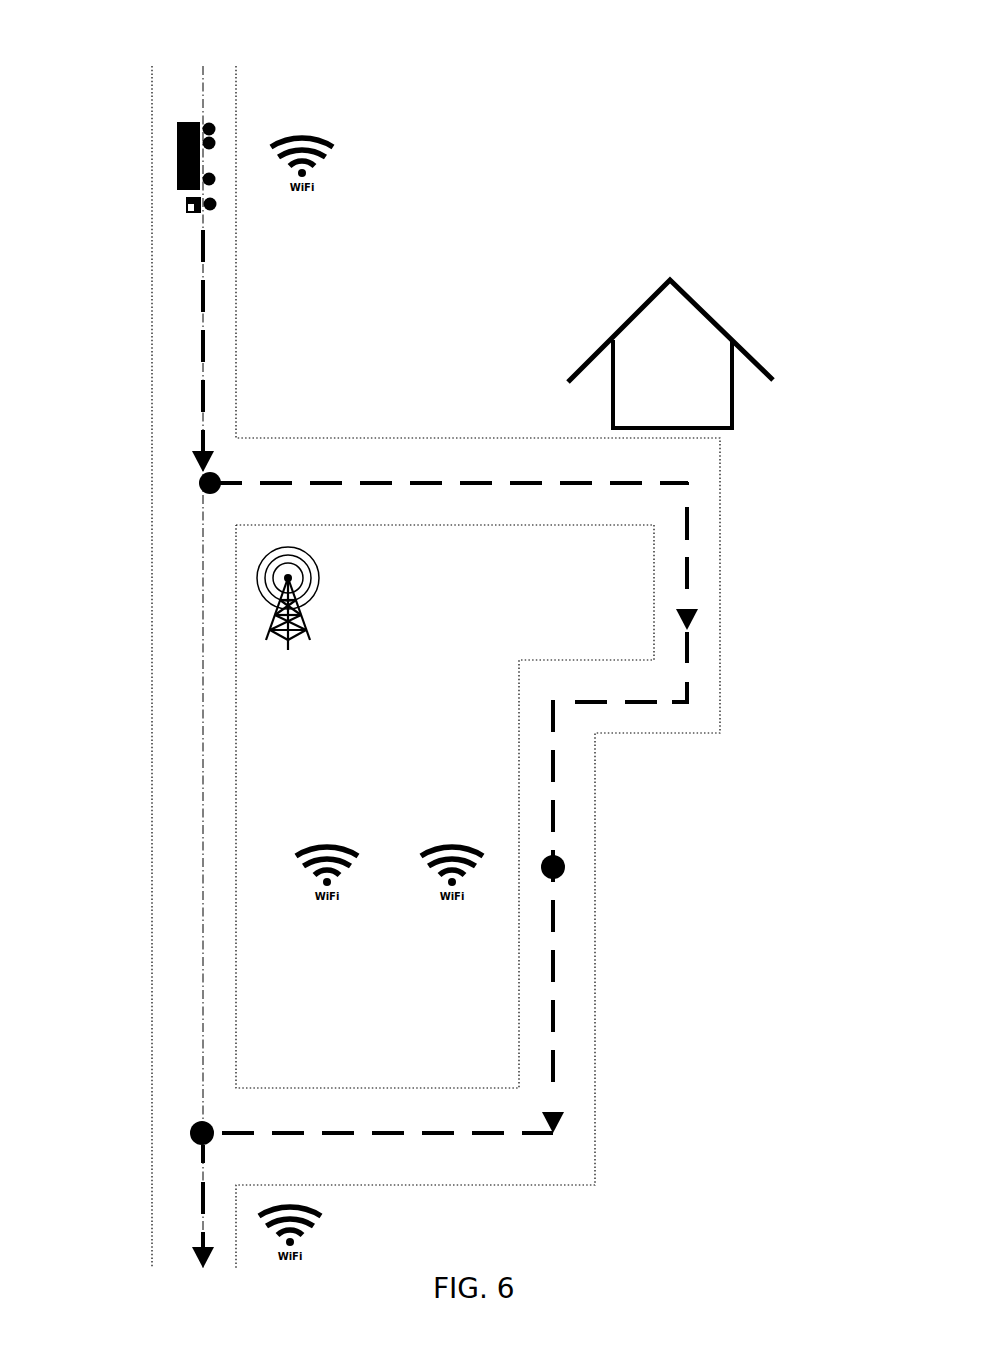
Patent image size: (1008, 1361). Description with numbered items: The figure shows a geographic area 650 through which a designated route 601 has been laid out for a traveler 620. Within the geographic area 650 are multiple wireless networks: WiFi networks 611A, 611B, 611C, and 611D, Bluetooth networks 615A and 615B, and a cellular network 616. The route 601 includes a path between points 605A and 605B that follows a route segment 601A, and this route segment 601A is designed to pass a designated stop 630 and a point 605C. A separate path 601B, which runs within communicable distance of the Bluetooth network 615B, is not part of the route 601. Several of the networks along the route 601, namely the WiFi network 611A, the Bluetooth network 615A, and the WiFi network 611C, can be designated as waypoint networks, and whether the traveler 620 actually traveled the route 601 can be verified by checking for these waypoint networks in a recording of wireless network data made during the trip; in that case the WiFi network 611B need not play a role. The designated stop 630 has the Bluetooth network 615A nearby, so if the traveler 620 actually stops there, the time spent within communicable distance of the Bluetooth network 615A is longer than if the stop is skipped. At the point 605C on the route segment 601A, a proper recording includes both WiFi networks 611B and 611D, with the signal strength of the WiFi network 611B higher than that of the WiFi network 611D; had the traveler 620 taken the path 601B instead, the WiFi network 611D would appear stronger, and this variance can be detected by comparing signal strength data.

The designated route 601 is at (203, 343).
The route segment 601A is at (690, 584).
The path 601B is at (197, 633).
The point 605A is at (200, 490).
The point 605B is at (190, 1128).
The point 605C is at (545, 875).
The WiFi network 611A is at (320, 168).
The WiFi network 611B is at (447, 838).
The WiFi network 611C is at (310, 1252).
The WiFi network 611D is at (325, 838).
The Bluetooth network 615A is at (688, 400).
The Bluetooth network 615B is at (92, 865).
The cellular network 616 is at (315, 636).
The traveler 620 is at (203, 112).
The designated stop 630 is at (700, 300).
The geographic area 650 is at (722, 156).